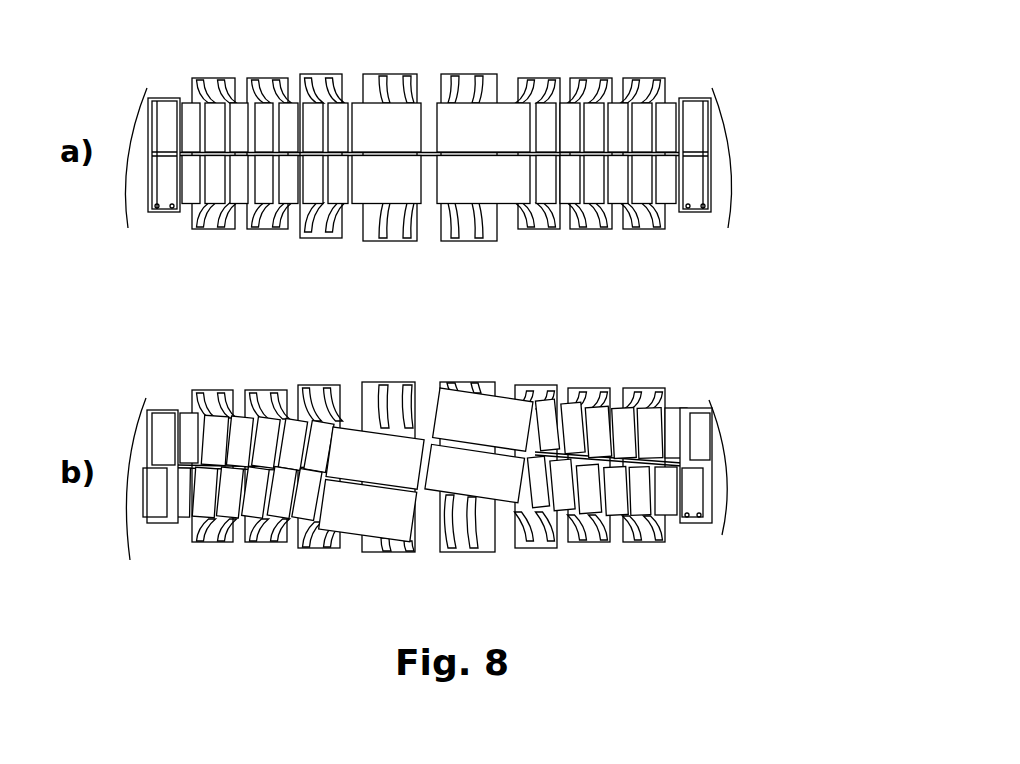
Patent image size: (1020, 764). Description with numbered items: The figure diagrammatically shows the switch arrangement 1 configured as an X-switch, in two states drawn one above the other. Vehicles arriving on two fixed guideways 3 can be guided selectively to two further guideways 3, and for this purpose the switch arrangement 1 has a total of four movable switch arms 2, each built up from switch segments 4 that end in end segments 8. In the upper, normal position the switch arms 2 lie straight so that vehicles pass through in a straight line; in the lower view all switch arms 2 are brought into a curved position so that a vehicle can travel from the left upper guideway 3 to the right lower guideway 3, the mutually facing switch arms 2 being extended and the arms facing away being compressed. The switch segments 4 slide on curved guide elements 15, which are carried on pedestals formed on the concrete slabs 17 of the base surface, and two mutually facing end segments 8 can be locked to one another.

The switch arrangement 1 is at (172, 50).
The switch arm 2 is at (172, 92).
The guideway 3 is at (146, 130).
The switch segment 4 is at (603, 110).
The end segment 8 is at (485, 105).
The guide element 15 is at (405, 82).
The concrete slab 17 is at (650, 82).